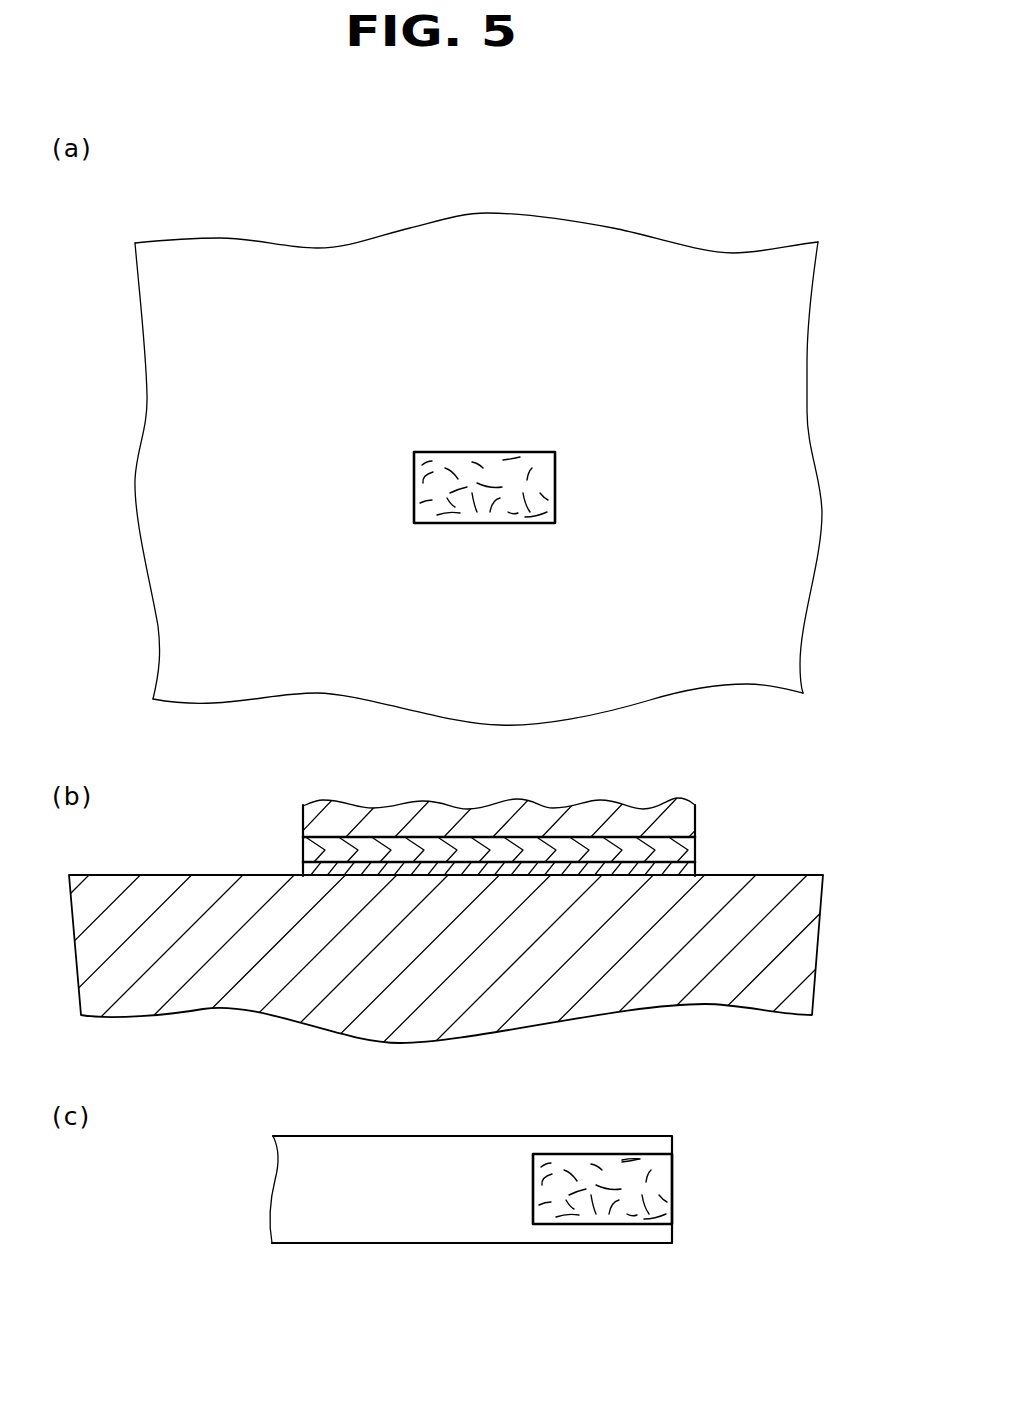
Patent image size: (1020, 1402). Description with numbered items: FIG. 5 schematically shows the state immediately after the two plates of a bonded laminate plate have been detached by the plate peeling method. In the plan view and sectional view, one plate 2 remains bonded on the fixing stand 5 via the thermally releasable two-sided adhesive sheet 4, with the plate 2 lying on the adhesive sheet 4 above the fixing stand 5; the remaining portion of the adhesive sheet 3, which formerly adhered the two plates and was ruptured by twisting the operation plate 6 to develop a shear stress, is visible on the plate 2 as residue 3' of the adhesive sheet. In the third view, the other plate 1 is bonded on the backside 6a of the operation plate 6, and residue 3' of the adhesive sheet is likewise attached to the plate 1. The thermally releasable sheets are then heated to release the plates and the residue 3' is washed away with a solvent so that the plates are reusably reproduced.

The plate 1 is at (640, 1157).
The plate 2 is at (528, 452).
The adhesive sheet 3 is at (535, 837).
The residue of the adhesive sheet 3' is at (583, 684).
The thermally releasable two-sided adhesive sheet 4 is at (302, 869).
The fixing stand 5 is at (695, 297).
The operation plate 6 is at (512, 1136).
The backside of the operation plate 6a is at (333, 1193).